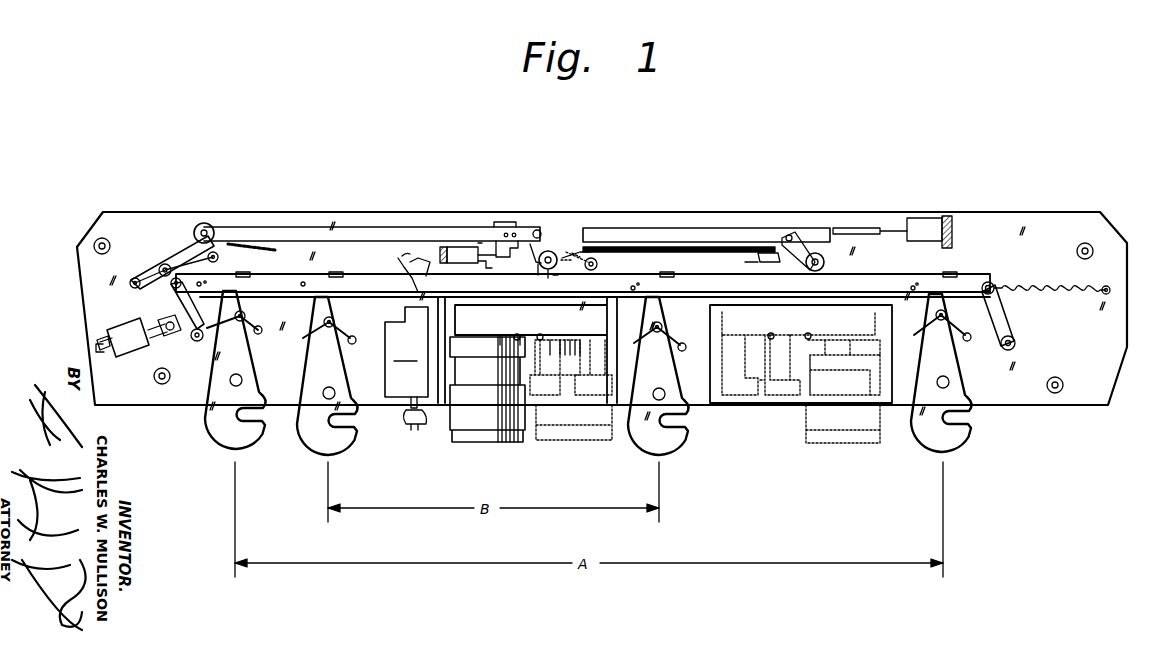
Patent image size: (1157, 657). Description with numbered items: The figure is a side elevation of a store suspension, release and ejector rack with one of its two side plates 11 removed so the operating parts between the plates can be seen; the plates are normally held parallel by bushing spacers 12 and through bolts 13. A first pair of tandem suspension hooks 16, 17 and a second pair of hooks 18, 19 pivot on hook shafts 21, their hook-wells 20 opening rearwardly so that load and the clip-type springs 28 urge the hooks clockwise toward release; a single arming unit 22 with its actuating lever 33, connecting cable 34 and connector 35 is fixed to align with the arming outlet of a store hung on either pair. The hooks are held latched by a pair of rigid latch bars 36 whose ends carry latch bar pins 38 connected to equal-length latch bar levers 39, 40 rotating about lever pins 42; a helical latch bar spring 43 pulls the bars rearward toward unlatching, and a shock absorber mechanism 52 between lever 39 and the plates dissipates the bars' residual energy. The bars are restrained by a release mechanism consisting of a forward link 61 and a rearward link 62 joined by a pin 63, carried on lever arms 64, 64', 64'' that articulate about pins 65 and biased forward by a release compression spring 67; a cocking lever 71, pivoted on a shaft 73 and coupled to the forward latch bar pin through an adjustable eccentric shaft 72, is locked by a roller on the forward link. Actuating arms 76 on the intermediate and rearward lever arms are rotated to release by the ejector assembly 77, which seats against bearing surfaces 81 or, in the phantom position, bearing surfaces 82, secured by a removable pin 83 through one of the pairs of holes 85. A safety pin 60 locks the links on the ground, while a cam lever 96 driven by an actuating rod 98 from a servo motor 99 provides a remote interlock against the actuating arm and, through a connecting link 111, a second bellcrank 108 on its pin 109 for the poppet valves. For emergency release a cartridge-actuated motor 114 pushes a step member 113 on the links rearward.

The side plates 11 is at (405, 212).
The bushing spacers 12 is at (100, 238).
The through bolts 13 is at (96, 250).
The suspension hook 16 is at (204, 445).
The suspension hook 17 is at (912, 448).
The suspension hook 18 is at (355, 450).
The suspension hook 19 is at (686, 447).
The hook-well 20 is at (250, 409).
The hook shafts 21 is at (240, 375).
The arming unit 22 is at (406, 352).
The clip-type spring 28 is at (249, 326).
The actuating lever 33 is at (424, 278).
The connecting cable 34 is at (408, 404).
The connector 35 is at (407, 426).
The latch bars 36 is at (372, 281).
The latch bar pins 38 is at (173, 288).
The latch bar lever 39 is at (182, 305).
The latch bar lever 40 is at (1004, 316).
The lever pins 42 is at (197, 341).
The latch bar spring 43 is at (1060, 284).
The shock absorber mechanism 52 is at (101, 333).
The safety pin 60 is at (570, 255).
The forward elongated link 61 is at (322, 230).
The rearward elongated link 62 is at (663, 228).
The pin 63 is at (541, 230).
The lever arm 64 is at (215, 212).
The lever arm 64' is at (558, 228).
The lever arm 64'' is at (788, 219).
The pins 65 is at (218, 257).
The release compression spring 67 is at (262, 250).
The cocking lever 71 is at (180, 258).
The eccentric shaft 72 is at (131, 286).
The shaft 73 is at (160, 266).
The actuating arm 76 is at (525, 241).
The ejector assembly 77 is at (520, 443).
The bearing surfaces 81 is at (465, 313).
The bearing surfaces 82 is at (872, 305).
The removable pin 83 is at (520, 332).
The aligned holes 85 is at (556, 326).
The cam lever 96 is at (785, 236).
The actuating rod 98 is at (860, 228).
The servo motor 99 is at (925, 218).
The second bellcrank 108 is at (592, 255).
The pin 109 is at (598, 263).
The connecting link 111 is at (702, 247).
The step member 113 is at (510, 222).
The cartridge-actuated motor 114 is at (458, 247).